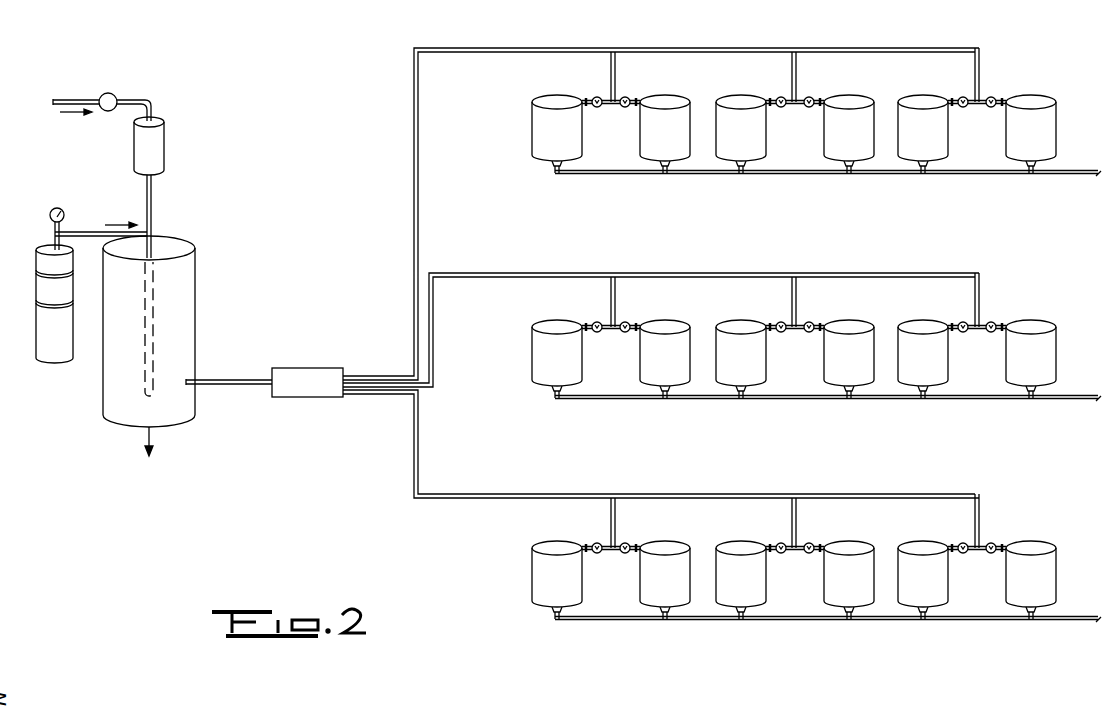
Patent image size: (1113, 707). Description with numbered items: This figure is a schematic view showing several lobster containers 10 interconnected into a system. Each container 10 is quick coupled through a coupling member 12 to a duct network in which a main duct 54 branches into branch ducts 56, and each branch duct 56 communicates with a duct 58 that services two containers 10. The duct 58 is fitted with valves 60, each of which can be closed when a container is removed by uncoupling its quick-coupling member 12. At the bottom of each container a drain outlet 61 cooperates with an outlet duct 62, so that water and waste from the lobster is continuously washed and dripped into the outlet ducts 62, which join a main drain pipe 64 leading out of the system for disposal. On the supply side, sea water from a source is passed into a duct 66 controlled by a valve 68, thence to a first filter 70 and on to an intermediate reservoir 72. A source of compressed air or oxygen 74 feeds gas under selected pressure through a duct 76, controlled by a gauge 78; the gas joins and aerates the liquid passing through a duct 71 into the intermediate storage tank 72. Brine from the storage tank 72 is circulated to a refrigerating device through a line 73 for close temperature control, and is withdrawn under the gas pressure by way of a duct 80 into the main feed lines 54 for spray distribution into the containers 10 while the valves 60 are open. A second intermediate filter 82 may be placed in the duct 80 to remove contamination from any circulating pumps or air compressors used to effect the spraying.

The container 10 is at (567, 140).
The coupling member 12 is at (638, 100).
The main duct 54 is at (414, 126).
The branch duct 56 is at (615, 68).
The duct 58 is at (598, 98).
The valve 60 is at (624, 107).
The drain outlet 61 is at (672, 176).
The outlet duct 62 is at (562, 176).
The main drain pipe 64 is at (788, 176).
The duct 66 is at (88, 99).
The valve 68 is at (112, 95).
The first filter 70 is at (165, 130).
The duct 71 is at (153, 190).
The intermediate reservoir 72 is at (182, 305).
The line 73 is at (140, 446).
The source of compressed air or oxygen 74 is at (42, 293).
The duct 76 is at (68, 232).
The gauge 78 is at (50, 214).
The duct 80 is at (222, 381).
The second intermediate filter 82 is at (318, 368).